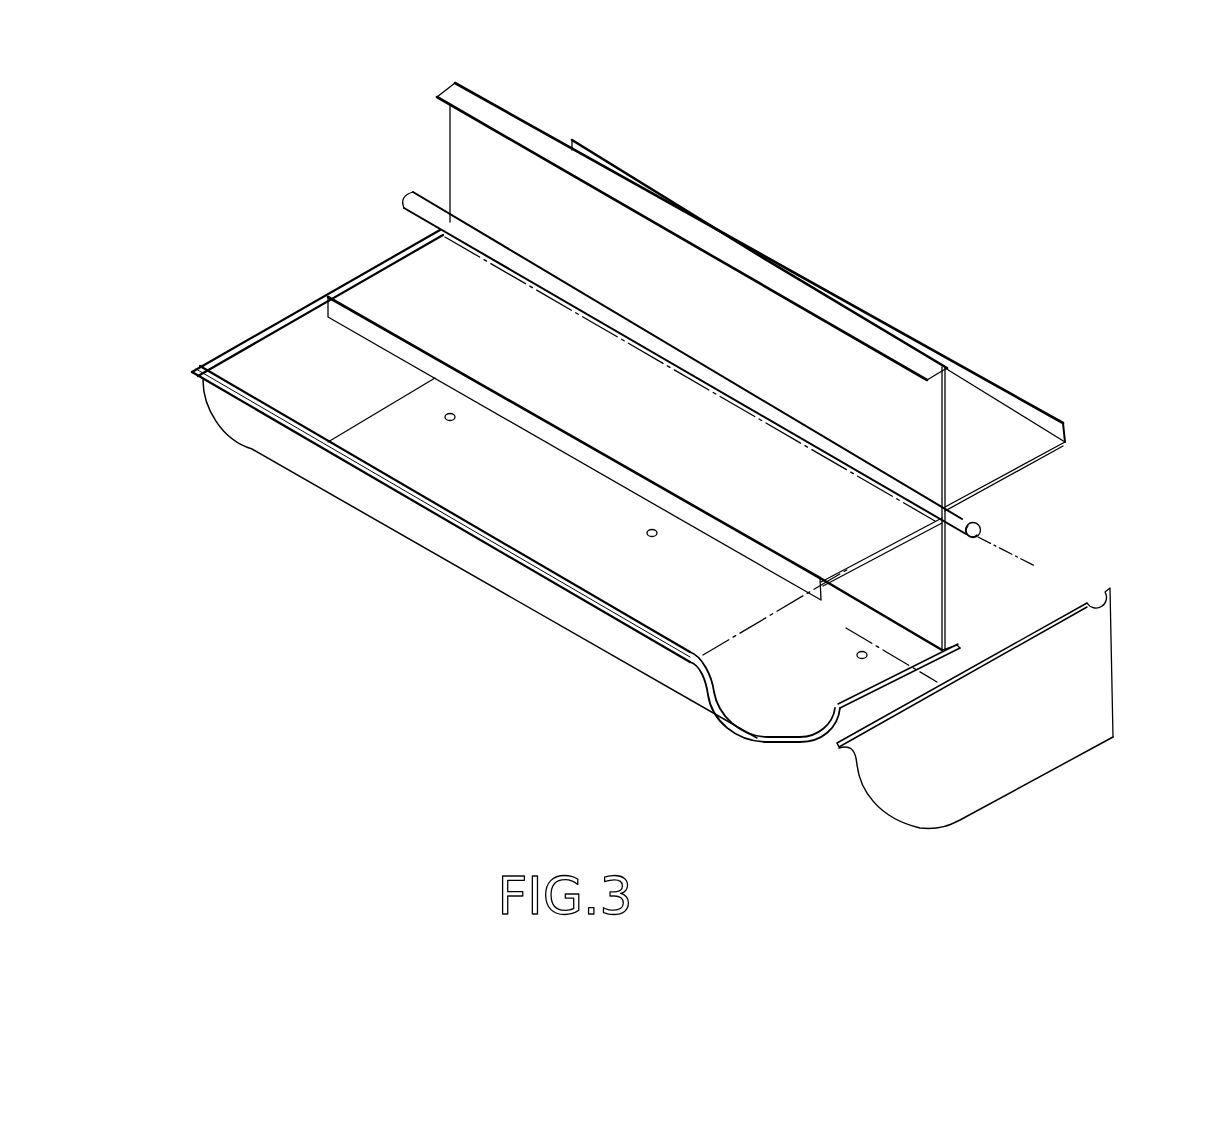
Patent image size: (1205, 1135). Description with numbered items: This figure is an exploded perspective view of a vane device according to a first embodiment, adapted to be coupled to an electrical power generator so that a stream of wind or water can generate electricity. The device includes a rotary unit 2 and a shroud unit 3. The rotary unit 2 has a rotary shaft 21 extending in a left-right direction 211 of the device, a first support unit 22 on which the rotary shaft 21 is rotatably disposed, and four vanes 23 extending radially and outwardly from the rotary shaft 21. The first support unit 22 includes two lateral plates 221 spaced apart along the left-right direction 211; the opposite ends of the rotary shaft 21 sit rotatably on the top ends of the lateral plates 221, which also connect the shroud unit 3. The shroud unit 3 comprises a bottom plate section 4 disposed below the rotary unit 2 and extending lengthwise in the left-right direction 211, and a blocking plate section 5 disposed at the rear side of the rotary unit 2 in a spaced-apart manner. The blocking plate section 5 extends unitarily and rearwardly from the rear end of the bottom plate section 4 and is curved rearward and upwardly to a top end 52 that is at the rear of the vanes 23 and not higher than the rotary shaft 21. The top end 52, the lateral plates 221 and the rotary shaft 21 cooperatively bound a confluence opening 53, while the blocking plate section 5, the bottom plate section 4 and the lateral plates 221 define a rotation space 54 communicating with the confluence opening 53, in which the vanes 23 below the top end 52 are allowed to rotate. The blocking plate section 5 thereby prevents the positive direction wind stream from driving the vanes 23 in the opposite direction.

The rotary unit 2 is at (770, 220).
The rotary shaft 21 is at (960, 517).
The left-right direction 211 is at (1006, 545).
The vanes 23 is at (882, 378).
The shroud unit 3 is at (322, 514).
The blocking plate section 5 is at (523, 593).
The top end 52 is at (607, 627).
The confluence opening 53 is at (772, 633).
The rotation space 54 is at (810, 695).
The bottom plate section 4 is at (883, 692).
The first support unit 22 is at (1096, 767).
The lateral plates 221 is at (272, 355).